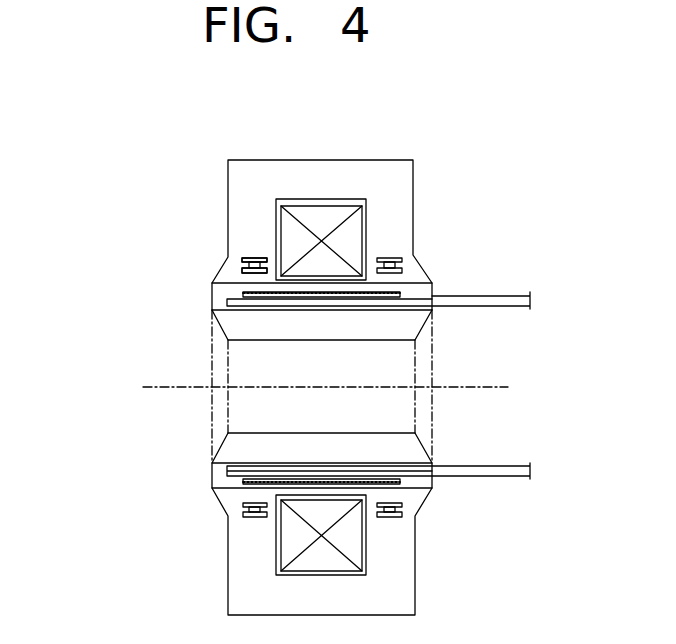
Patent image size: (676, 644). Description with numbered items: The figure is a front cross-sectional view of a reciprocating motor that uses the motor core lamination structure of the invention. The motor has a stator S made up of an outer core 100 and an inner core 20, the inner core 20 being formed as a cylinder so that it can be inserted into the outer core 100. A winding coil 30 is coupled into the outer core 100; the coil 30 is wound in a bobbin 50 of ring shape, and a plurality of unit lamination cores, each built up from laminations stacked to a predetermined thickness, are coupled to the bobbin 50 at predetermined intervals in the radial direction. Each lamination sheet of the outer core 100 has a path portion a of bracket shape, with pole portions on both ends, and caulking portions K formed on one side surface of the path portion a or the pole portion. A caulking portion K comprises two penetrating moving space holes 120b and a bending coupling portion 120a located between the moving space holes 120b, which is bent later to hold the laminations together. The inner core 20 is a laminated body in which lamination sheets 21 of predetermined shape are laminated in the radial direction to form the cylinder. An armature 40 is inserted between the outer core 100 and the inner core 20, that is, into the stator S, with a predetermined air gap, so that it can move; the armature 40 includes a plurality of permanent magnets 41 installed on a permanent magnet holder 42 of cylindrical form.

The outer core 100 is at (228, 223).
The stator S is at (77, 203).
The path portion a is at (360, 170).
The winding coil 30 is at (313, 218).
The bobbin 50 is at (366, 216).
The caulking portion K is at (229, 258).
The bending coupling portion 120a is at (255, 258).
The moving space hole 120b is at (242, 270).
The inner core 20 is at (207, 330).
The lamination sheet 21 is at (421, 446).
The armature 40 is at (208, 480).
The permanent magnet 41 is at (258, 485).
The permanent magnet holder 42 is at (483, 477).